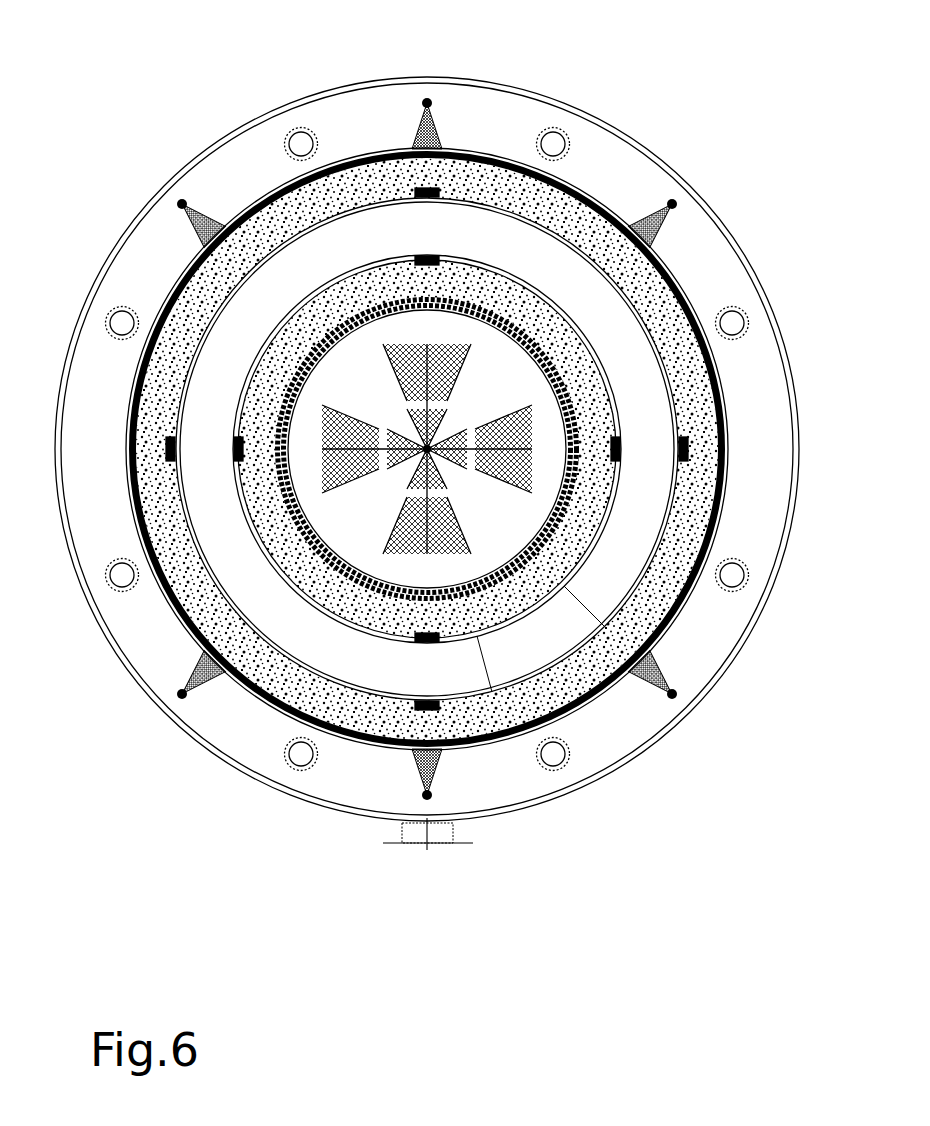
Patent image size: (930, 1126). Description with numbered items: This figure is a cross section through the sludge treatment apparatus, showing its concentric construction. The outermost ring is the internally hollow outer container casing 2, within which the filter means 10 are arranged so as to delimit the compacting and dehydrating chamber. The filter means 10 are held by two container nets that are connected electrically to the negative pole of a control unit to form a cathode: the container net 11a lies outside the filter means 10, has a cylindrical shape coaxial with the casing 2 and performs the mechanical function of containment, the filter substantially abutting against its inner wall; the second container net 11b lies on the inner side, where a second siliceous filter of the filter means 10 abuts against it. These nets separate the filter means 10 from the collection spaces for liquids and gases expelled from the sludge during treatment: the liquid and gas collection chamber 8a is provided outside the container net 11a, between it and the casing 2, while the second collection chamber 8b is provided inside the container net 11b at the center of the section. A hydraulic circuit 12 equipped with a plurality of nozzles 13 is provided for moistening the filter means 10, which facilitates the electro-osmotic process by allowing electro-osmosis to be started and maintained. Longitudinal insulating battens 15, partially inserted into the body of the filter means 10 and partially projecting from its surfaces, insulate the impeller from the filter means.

The outer container casing 2 is at (733, 665).
The liquid and gas collection chamber 8a is at (615, 722).
The second collection chamber 8b is at (490, 387).
The filter means 10 is at (272, 682).
The container net 11a is at (184, 278).
The second container net 11b is at (247, 395).
The hydraulic circuit 12 is at (180, 697).
The nozzle 13 is at (428, 103).
The longitudinal insulating batten 15 is at (430, 645).